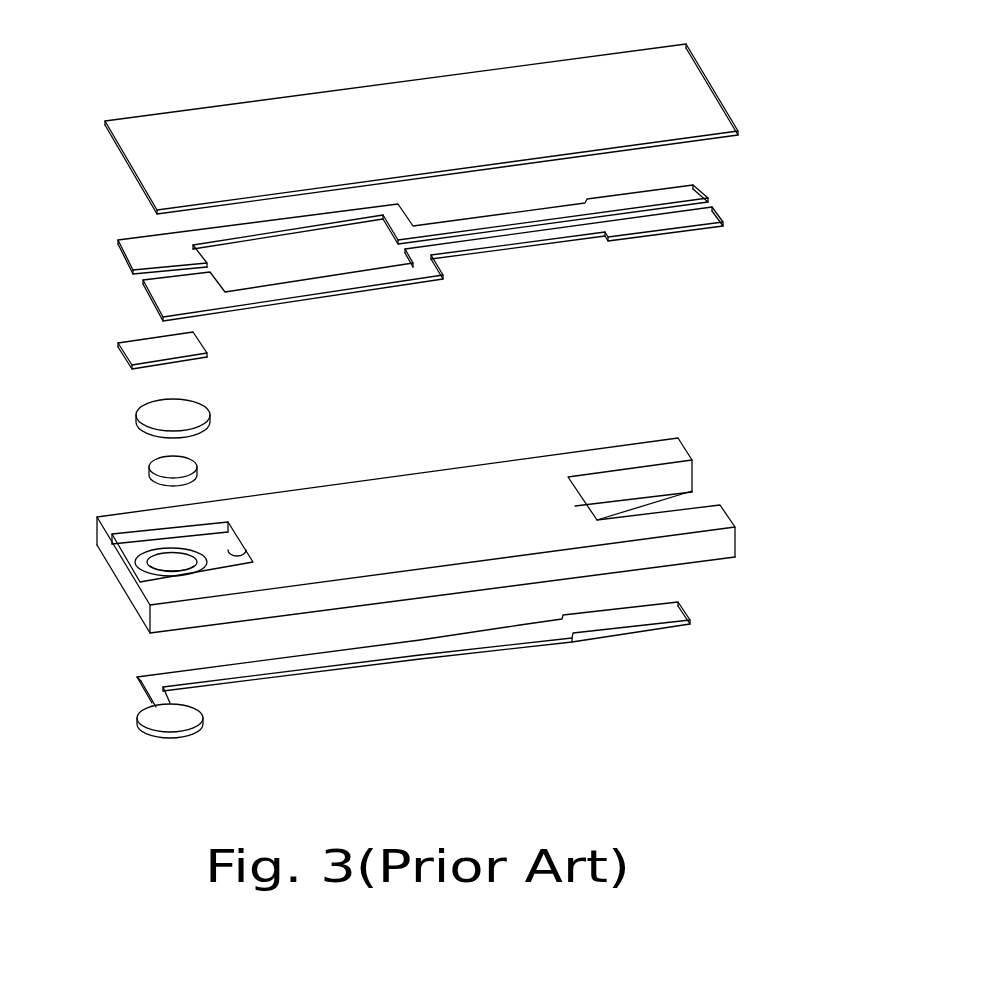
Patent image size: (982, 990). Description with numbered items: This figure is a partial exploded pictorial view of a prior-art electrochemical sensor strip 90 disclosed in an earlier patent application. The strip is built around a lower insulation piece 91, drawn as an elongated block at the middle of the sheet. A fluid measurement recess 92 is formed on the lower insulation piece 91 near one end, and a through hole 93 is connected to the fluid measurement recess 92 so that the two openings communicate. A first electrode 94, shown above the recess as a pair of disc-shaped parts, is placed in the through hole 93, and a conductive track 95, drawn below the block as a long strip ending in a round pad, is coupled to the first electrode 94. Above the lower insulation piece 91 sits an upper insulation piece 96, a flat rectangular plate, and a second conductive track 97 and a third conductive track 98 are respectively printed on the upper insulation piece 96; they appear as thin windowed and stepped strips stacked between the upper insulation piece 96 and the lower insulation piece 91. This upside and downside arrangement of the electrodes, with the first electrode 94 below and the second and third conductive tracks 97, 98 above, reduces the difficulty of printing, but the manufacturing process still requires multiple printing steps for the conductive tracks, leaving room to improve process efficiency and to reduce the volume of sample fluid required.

The electrochemical sensor strip 90 is at (713, 377).
The lower insulation piece 91 is at (598, 450).
The fluid measurement recess 92 is at (128, 547).
The through hole 93 is at (163, 568).
The first electrode 94 is at (193, 458).
The conductive track 95 is at (490, 650).
The upper insulation piece 96 is at (705, 86).
The second conductive track 97 is at (695, 182).
The third conductive track 98 is at (702, 228).